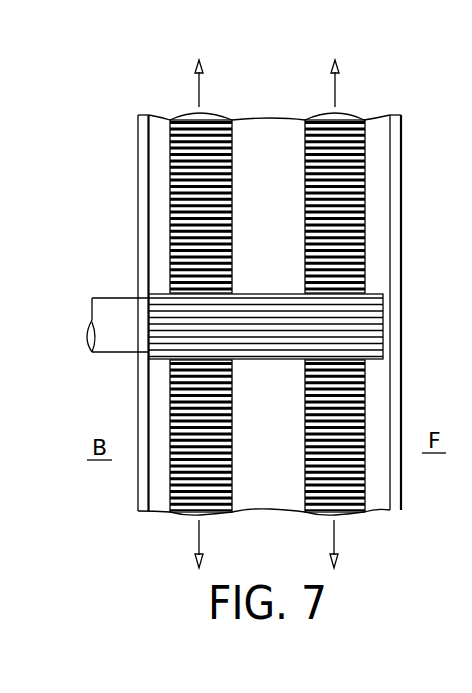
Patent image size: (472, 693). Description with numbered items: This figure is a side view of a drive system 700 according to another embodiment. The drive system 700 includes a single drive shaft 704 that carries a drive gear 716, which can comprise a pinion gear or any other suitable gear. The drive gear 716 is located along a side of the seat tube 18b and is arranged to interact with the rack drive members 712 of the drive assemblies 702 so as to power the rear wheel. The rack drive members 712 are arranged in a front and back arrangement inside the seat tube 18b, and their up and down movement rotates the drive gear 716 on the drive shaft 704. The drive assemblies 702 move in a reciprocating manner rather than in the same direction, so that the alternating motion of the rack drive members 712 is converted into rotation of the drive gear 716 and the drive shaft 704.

The seat tube 18b is at (130, 113).
The drive system 700 is at (130, 169).
The drive assembly 702 is at (178, 226).
The drive shaft 704 is at (118, 333).
The rack drive member 712 is at (353, 228).
The drive gear 716 is at (363, 322).